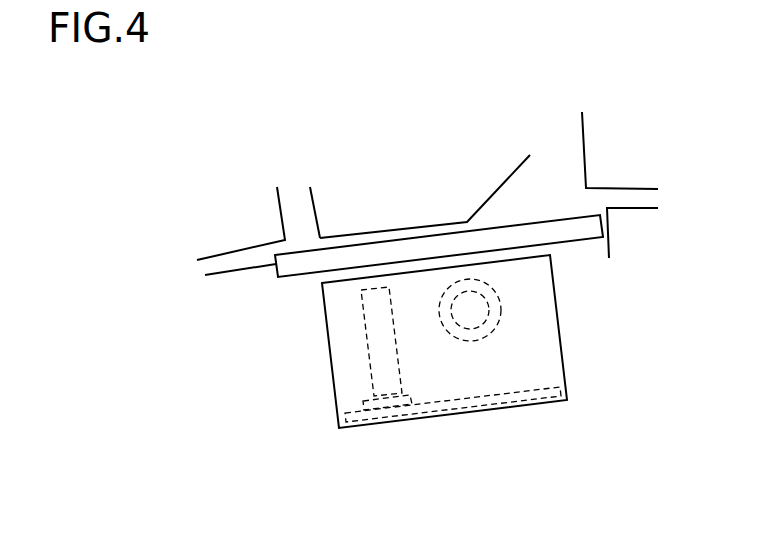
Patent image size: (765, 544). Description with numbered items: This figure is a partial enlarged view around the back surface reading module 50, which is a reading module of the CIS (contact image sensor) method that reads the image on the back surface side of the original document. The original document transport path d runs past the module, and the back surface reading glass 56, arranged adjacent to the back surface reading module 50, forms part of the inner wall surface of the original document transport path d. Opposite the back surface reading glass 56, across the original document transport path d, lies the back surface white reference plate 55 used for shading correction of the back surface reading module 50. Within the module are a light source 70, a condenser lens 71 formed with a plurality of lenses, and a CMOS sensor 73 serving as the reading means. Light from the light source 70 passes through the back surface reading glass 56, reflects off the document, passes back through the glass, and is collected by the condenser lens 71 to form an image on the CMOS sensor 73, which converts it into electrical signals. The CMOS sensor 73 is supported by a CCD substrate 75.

The back surface reading module 50 is at (585, 365).
The back surface white reference plate 55 is at (413, 226).
The back surface reading glass 56 is at (537, 237).
The light source 70 is at (502, 302).
The condenser lens 71 is at (366, 336).
The CMOS sensor 73 is at (363, 403).
The CCD substrate 75 is at (444, 416).
The original document transport path d is at (197, 266).